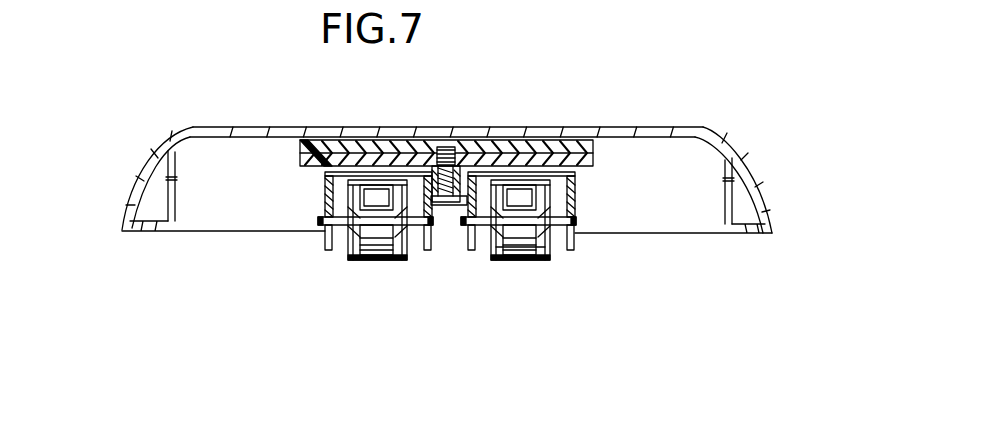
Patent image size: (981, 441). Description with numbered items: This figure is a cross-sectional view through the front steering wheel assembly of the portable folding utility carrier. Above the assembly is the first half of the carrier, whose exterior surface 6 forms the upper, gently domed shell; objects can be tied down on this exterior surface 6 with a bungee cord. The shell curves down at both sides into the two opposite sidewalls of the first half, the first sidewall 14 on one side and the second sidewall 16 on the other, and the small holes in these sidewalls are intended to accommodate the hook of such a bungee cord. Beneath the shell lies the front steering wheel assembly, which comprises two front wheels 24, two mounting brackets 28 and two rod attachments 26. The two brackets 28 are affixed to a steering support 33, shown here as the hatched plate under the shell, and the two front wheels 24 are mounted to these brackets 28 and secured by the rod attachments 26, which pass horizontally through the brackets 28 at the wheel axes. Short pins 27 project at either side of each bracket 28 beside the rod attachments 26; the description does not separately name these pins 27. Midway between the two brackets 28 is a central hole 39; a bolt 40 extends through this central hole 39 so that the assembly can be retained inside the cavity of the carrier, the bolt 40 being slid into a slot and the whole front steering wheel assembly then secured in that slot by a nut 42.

The exterior surface 6 is at (537, 128).
The first sidewall 14 is at (765, 195).
The second sidewall 16 is at (130, 181).
The steering support 33 is at (580, 128).
The central hole 39 is at (432, 128).
The bolt 40 is at (457, 128).
The nut 42 is at (417, 128).
The rod attachment 26 is at (327, 208).
The pin 27 is at (318, 227).
The mounting bracket 28 is at (372, 260).
The front wheel 24 is at (510, 260).